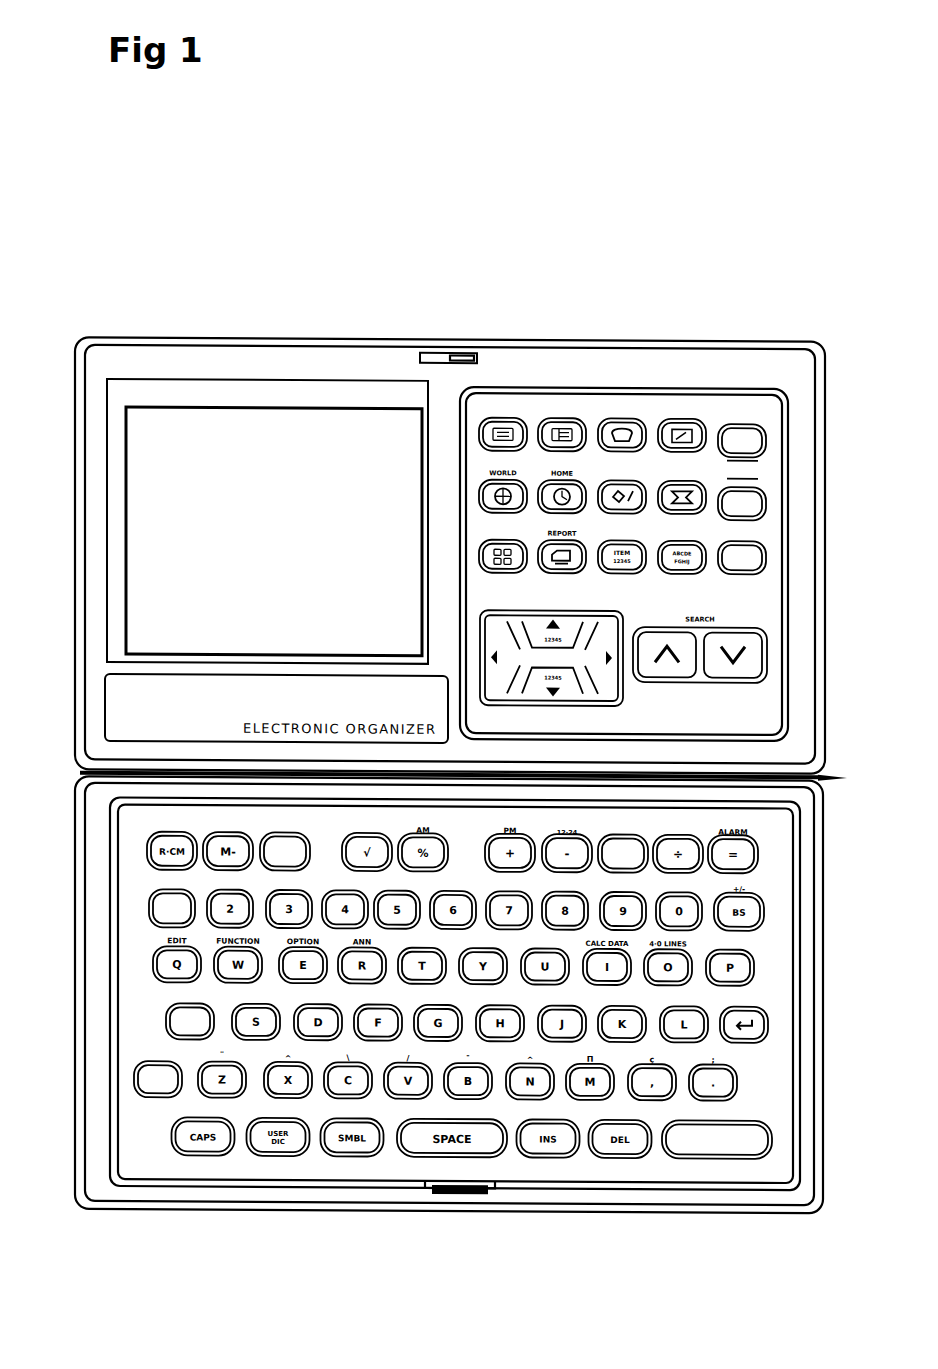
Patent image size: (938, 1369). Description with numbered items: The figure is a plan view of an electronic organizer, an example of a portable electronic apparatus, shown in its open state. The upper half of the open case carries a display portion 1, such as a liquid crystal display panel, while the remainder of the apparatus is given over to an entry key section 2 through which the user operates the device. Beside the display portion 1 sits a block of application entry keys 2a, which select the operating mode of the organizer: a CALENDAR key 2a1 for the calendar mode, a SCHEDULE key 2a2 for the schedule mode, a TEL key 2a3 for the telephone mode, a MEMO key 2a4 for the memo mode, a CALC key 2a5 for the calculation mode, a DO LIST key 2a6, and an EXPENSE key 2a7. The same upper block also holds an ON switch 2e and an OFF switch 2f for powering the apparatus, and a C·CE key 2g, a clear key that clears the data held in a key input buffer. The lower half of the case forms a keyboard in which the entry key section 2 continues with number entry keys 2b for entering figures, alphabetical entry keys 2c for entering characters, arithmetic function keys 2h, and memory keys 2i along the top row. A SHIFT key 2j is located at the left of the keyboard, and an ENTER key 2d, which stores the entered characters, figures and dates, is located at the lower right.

The display portion 1 is at (362, 458).
The entry key section 2 is at (749, 697).
The application entry keys 2a is at (596, 405).
The CALENDAR key 2a1 is at (478, 417).
The SCHEDULE key 2a2 is at (541, 417).
The TEL key 2a3 is at (643, 417).
The MEMO key 2a4 is at (693, 417).
The CALC key 2a5 is at (480, 560).
The DO LIST key 2a6 is at (640, 510).
The EXPENSE key 2a7 is at (706, 474).
The number entry keys 2b is at (140, 903).
The alphabetical entry keys 2c is at (148, 1018).
The ENTER key 2d is at (712, 1160).
The ON switch 2e is at (767, 441).
The OFF switch 2f is at (767, 503).
The C·CE key 2g is at (767, 557).
The arithmetic function keys 2h is at (628, 830).
The memory keys 2i is at (248, 826).
The SHIFT key 2j is at (158, 1100).